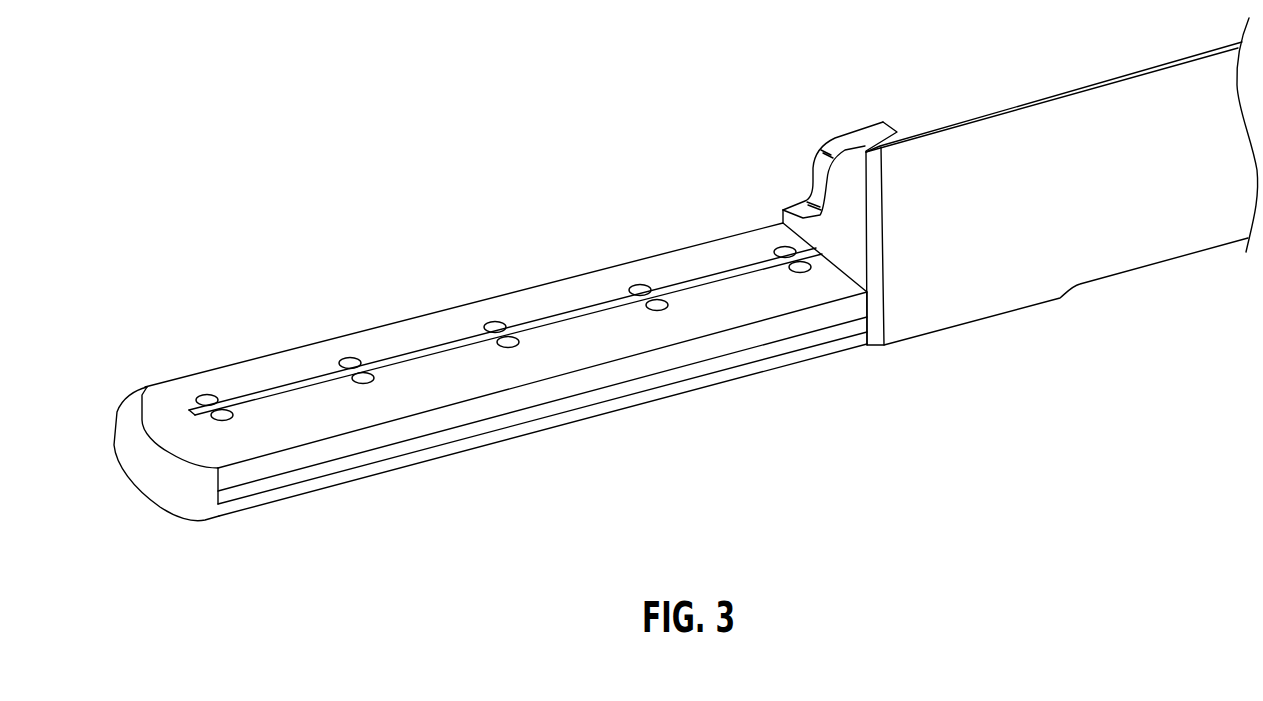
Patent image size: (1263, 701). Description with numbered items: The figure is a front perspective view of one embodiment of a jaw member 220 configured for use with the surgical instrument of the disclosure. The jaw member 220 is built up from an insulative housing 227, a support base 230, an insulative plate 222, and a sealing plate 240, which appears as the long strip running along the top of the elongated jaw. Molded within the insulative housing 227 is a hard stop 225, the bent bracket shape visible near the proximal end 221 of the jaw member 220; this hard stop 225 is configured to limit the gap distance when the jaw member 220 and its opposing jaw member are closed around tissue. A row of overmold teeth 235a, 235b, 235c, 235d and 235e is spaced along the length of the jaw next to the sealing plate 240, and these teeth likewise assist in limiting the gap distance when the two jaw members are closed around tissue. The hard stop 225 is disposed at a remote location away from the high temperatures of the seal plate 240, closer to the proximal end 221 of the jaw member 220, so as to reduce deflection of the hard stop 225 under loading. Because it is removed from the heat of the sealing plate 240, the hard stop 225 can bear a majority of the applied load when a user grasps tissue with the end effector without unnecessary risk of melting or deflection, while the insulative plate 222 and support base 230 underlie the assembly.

The jaw member 220 is at (378, 93).
The proximal end 221 is at (1123, 81).
The insulative plate 222 is at (517, 400).
The hard stop 225 is at (842, 143).
The insulative housing 227 is at (230, 507).
The support base 230 is at (750, 355).
The overmold tooth 235a is at (207, 395).
The overmold tooth 235b is at (350, 358).
The overmold tooth 235c is at (495, 322).
The overmold tooth 235d is at (640, 286).
The overmold tooth 235e is at (784, 248).
The sealing plate 240 is at (565, 290).